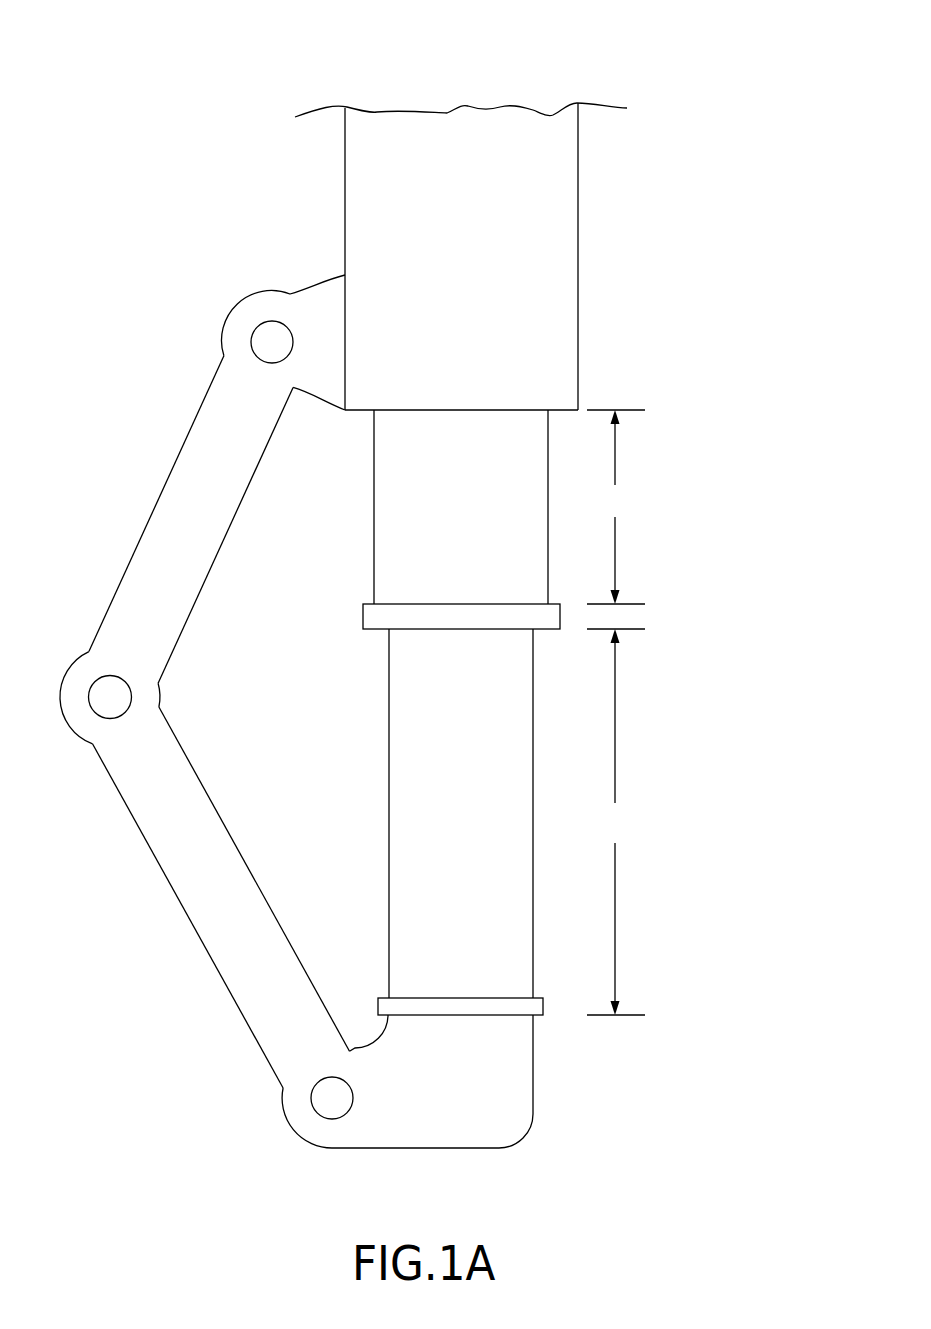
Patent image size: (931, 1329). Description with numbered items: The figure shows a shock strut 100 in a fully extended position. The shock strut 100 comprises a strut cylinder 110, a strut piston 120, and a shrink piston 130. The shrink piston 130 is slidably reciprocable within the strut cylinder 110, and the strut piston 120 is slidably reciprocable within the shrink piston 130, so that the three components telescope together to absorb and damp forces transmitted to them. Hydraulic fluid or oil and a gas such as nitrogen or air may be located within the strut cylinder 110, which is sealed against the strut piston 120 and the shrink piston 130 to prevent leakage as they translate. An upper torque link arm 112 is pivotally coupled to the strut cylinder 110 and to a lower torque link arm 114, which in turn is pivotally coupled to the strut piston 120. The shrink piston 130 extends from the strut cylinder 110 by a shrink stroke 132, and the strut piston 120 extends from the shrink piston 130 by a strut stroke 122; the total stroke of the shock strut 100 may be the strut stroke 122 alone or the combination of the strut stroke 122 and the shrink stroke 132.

The shock strut 100 is at (768, 64).
The strut cylinder 110 is at (563, 196).
The upper torque link arm 112 is at (137, 527).
The lower torque link arm 114 is at (160, 868).
The strut piston 120 is at (405, 822).
The strut stroke 122 is at (616, 822).
The shrink piston 130 is at (390, 496).
The shrink stroke 132 is at (616, 507).